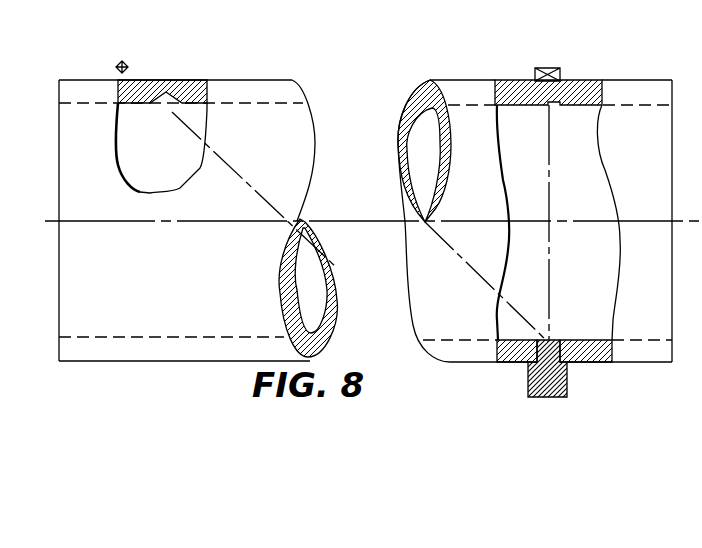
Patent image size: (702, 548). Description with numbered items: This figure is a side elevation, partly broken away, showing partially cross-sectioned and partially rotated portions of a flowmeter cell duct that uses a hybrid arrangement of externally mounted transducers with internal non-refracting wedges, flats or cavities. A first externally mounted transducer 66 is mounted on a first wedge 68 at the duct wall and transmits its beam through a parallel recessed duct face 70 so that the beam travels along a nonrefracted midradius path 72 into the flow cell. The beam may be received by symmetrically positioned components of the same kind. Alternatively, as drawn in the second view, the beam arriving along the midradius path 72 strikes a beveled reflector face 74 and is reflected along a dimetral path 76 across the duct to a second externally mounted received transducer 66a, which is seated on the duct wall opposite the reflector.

The first externally mounted transducer 66 is at (119, 62).
The second externally mounted received transducer 66a is at (550, 67).
The first wedge 68 is at (133, 79).
The parallel recessed duct face 70 is at (150, 104).
The nonrefracted midradius path 72 is at (311, 240).
The beveled reflector face 74 is at (553, 339).
The dimetral path 76 is at (551, 262).